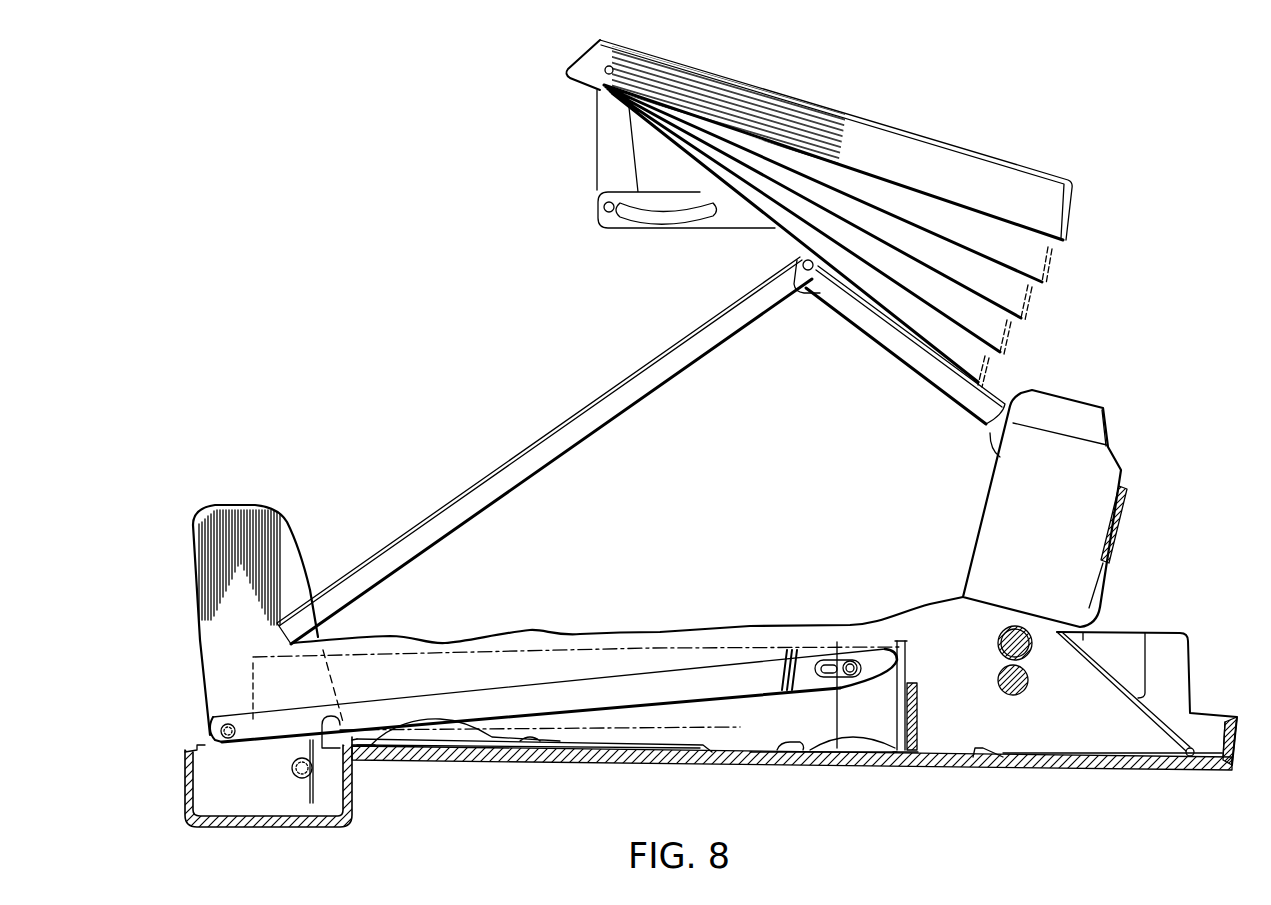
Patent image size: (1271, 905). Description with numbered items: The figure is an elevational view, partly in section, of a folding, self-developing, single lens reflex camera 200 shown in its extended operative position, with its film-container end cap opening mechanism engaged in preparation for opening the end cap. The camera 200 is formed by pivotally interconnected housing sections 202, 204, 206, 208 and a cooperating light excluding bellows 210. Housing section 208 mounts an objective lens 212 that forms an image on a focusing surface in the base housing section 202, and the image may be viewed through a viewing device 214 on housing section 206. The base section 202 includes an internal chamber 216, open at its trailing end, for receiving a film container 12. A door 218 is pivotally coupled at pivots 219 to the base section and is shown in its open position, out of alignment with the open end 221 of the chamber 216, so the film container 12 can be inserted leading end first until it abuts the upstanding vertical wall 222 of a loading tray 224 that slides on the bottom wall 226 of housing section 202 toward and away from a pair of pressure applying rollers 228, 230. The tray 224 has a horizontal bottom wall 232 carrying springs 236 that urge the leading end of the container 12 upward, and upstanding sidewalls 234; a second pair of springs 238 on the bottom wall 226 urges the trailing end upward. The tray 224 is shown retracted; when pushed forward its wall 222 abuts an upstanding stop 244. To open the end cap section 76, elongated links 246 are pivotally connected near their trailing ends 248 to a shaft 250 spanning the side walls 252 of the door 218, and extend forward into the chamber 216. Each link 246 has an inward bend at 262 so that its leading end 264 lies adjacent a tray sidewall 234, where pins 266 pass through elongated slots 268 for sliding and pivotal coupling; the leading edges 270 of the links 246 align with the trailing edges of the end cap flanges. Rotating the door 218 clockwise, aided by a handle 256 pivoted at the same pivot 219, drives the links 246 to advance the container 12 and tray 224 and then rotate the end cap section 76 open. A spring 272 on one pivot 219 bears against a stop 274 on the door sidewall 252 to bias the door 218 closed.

The film container 12 is at (733, 740).
The end cap section 76 is at (910, 650).
The camera 200 is at (1130, 464).
The housing section 202 is at (583, 766).
The housing section 204 is at (540, 419).
The housing section 206 is at (1012, 378).
The housing section 208 is at (1110, 406).
The light excluding bellows 210 is at (732, 486).
The objective lens 212 is at (1130, 518).
The viewing device 214 is at (975, 134).
The chamber 216 is at (628, 738).
The door 218 is at (288, 822).
The pivots 219 is at (324, 714).
The open end 221 is at (362, 748).
The vertical wall 222 is at (918, 706).
The loading tray 224 is at (921, 750).
The bottom wall 226 is at (545, 762).
The pressure applying roller 228 is at (1032, 647).
The pressure applying roller 230 is at (1030, 683).
The horizontal bottom wall 232 is at (820, 762).
The upstanding sidewalls 234 is at (843, 716).
The springs 236 is at (817, 742).
The second pair of springs 238 is at (477, 733).
The stop 244 is at (986, 751).
The elongated links 246 is at (577, 683).
The trailing ends 248 is at (231, 747).
The shaft 250 is at (227, 722).
The side walls 252 is at (204, 753).
The handle 256 is at (288, 513).
The inward bend 262 is at (789, 648).
The leading ends 264 is at (867, 654).
The pins 266 is at (850, 657).
The elongated slots 268 is at (837, 680).
The leading edges 270 is at (907, 660).
The spring 272 is at (310, 791).
The stop 274 is at (296, 762).